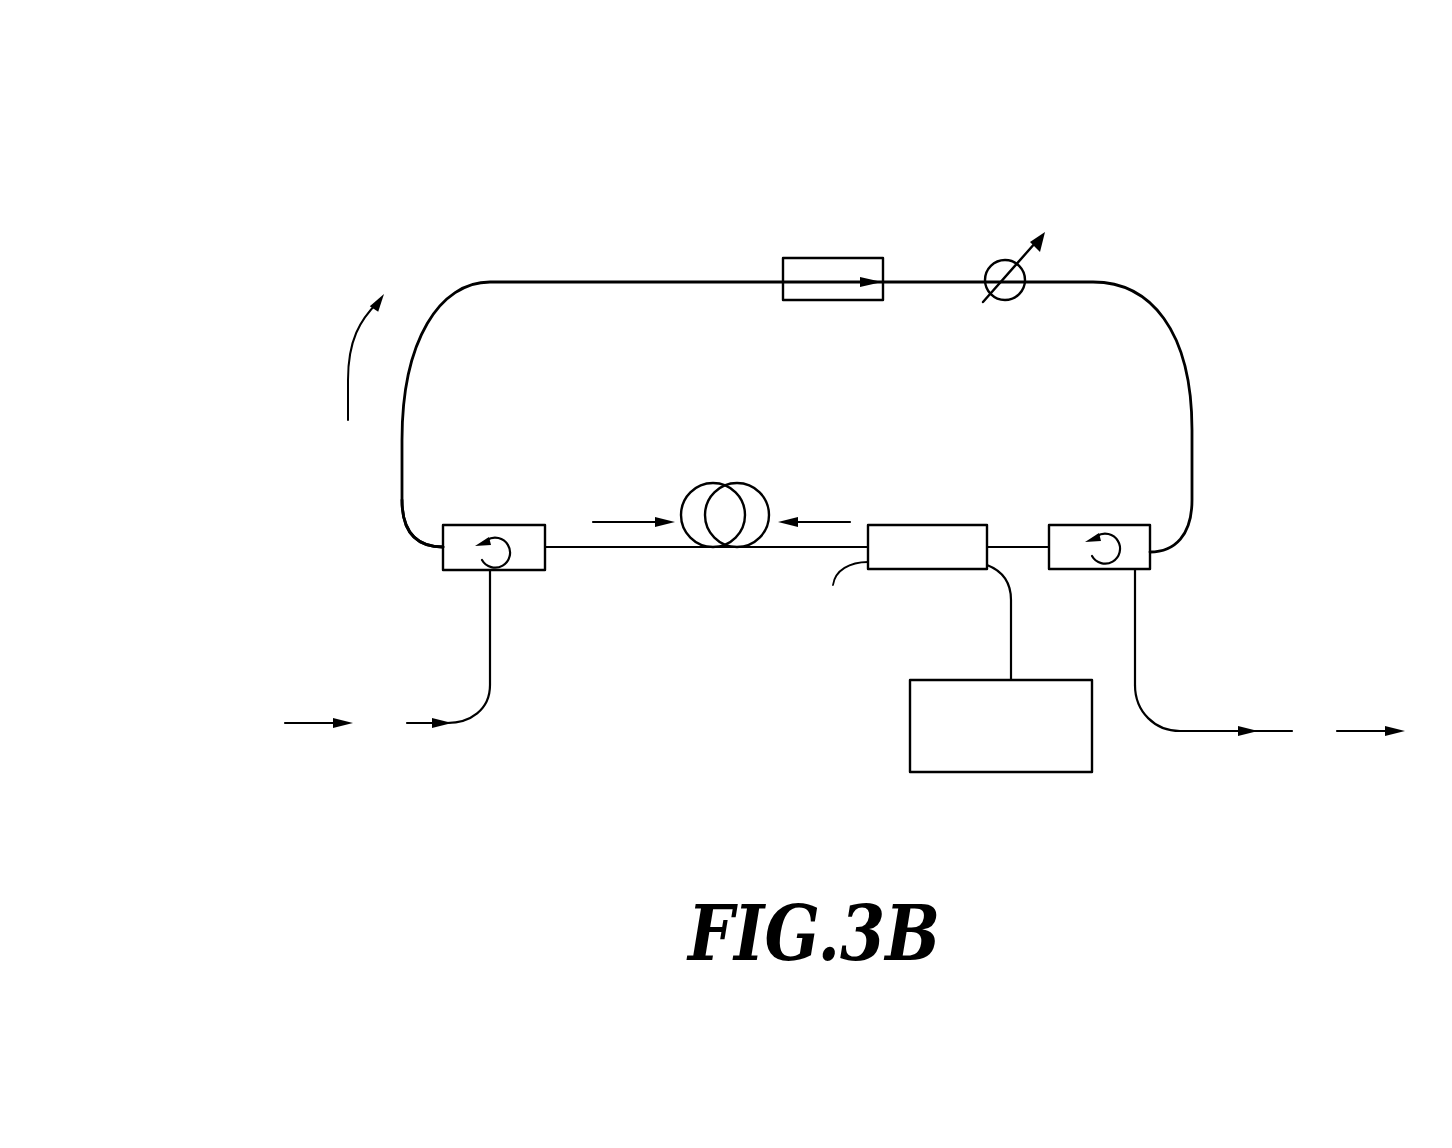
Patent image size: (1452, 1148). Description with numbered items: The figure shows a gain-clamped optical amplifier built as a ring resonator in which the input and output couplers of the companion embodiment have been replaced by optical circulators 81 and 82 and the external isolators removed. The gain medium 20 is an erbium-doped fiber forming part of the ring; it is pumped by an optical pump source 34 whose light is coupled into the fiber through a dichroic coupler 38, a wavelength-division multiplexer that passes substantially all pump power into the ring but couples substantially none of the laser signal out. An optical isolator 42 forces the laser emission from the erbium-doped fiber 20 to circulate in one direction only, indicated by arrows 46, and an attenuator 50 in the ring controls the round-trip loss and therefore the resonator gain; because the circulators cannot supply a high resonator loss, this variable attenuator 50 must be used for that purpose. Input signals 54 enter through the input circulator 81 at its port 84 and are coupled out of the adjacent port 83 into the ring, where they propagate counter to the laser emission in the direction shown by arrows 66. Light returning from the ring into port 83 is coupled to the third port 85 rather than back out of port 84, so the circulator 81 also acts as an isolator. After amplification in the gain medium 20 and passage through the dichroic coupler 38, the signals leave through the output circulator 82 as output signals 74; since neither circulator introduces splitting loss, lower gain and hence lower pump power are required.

The gain medium 20 is at (707, 530).
The optical pump source 34 is at (910, 740).
The dichroic coupler 38 is at (908, 523).
The optical isolator 42 is at (782, 272).
The arrows 46 is at (347, 357).
The attenuator 50 is at (1028, 272).
The input optical signals 54 is at (312, 722).
The arrows 66 is at (623, 518).
The output optical signals 74 is at (1358, 730).
The input optical circulator 81 is at (497, 523).
The output optical circulator 82 is at (1093, 523).
The port 83 is at (553, 548).
The port 84 is at (488, 587).
The third port 85 is at (443, 547).